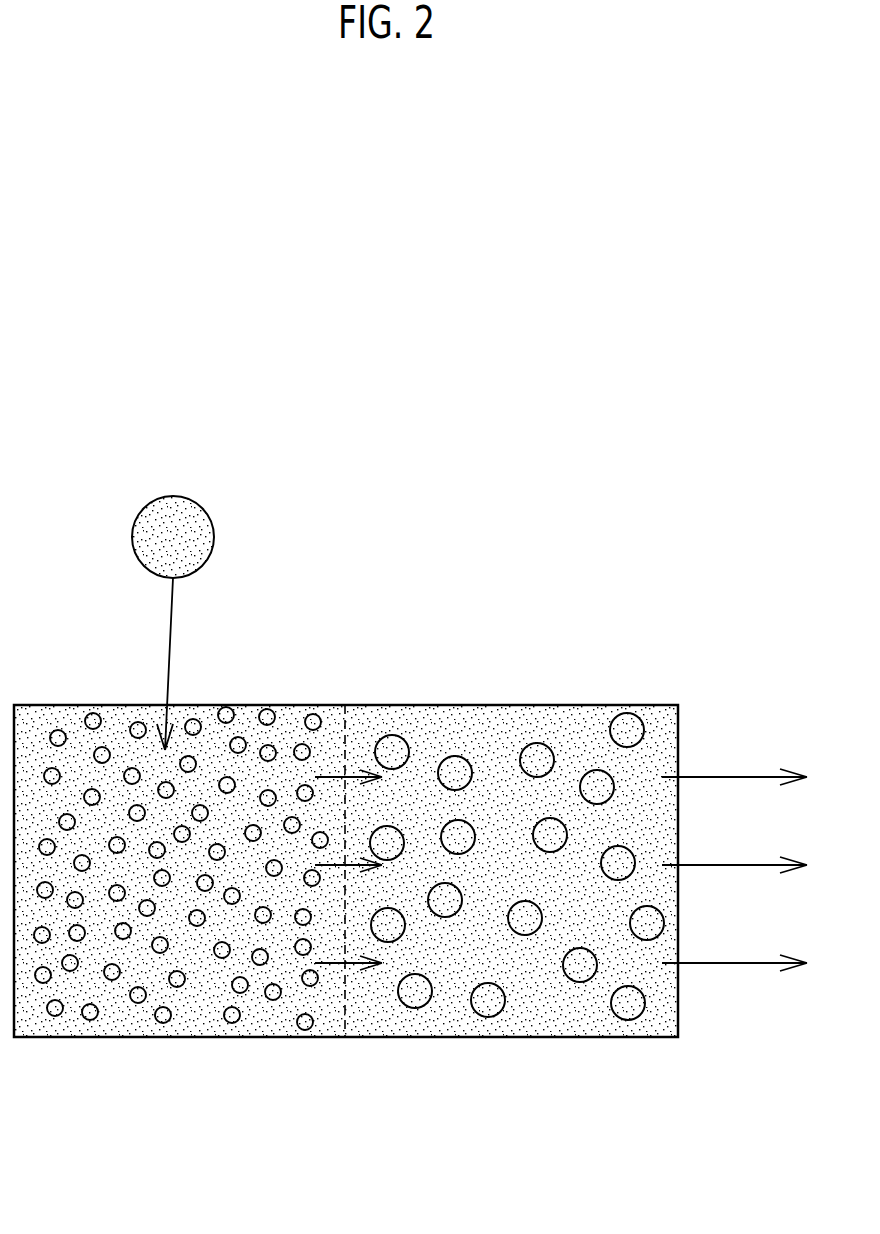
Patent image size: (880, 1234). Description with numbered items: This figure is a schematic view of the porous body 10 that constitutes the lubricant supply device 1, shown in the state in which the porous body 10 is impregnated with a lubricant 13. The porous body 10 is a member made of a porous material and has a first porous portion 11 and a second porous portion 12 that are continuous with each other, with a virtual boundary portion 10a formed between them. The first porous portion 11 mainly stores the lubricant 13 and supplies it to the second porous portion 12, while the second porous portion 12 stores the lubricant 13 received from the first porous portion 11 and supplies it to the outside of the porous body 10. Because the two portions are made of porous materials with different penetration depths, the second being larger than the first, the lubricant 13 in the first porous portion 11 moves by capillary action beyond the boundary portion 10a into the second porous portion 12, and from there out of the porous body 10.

The lubricant supply device 1 is at (443, 485).
The porous body 10 is at (512, 652).
The boundary portion 10a is at (367, 710).
The first porous portion 11 is at (340, 1060).
The second porous portion 12 is at (678, 1060).
The lubricant 13 is at (131, 534).